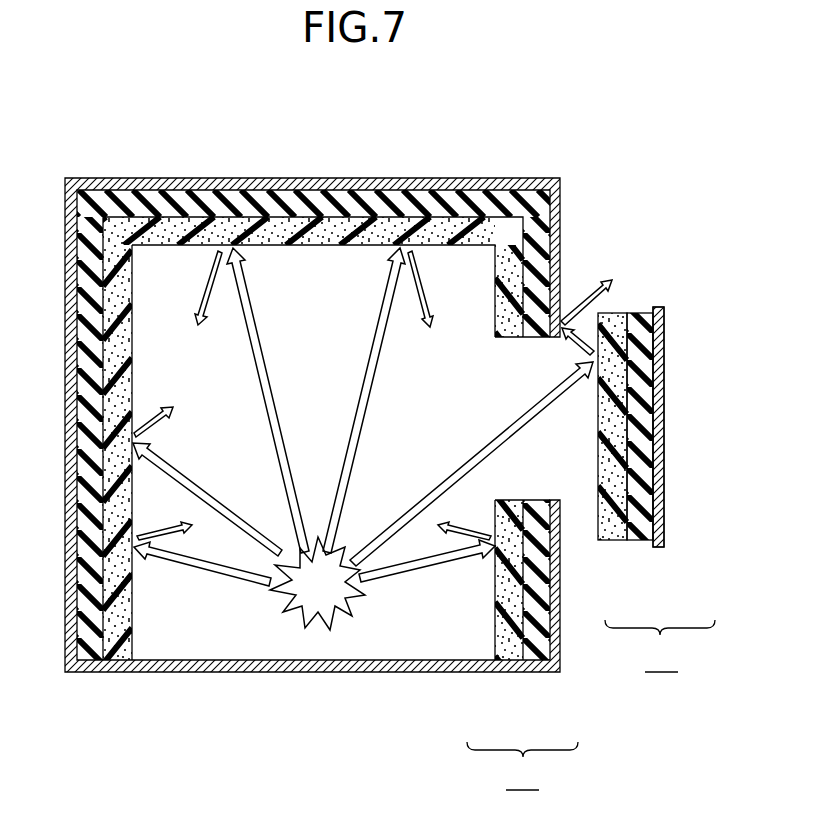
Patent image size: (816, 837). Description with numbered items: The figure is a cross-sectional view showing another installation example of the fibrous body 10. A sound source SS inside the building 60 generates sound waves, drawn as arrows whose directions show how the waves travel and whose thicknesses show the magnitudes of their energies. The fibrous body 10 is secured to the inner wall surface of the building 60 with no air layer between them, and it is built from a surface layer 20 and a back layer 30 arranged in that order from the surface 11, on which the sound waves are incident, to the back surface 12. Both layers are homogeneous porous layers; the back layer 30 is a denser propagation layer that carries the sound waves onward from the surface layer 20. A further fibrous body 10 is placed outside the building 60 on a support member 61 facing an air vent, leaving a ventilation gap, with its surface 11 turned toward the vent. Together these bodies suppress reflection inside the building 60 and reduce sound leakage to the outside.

The fibrous body 10 is at (591, 705).
The surface 11 is at (495, 628).
The back surface 12 is at (560, 628).
The surface layer 20 is at (510, 657).
The back layer 30 is at (535, 657).
The building 60 is at (110, 188).
The support member 61 is at (665, 333).
The sound source SS is at (310, 597).